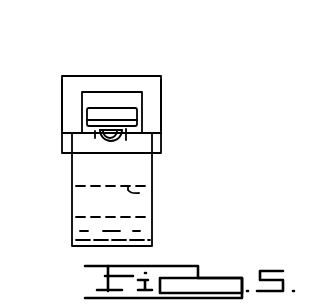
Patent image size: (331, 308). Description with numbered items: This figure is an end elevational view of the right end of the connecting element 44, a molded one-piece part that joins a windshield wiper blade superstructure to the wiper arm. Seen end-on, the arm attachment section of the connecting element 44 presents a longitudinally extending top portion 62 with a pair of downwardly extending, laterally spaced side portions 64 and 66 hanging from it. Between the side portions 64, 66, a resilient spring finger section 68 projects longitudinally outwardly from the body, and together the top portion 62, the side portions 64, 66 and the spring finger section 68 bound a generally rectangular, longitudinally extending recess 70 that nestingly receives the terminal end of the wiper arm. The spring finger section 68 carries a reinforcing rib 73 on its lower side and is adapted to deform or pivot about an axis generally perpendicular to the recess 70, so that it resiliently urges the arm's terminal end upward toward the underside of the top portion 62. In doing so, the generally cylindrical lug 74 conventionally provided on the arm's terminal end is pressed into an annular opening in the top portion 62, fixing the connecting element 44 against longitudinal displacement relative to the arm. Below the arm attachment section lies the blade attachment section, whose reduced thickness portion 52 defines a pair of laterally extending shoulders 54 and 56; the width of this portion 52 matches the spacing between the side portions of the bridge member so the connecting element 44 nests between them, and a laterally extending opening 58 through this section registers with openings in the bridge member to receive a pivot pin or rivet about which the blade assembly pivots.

The connecting element 44 is at (165, 128).
The reduced thickness portion 52 is at (135, 232).
The laterally extending shoulder 54 is at (72, 153).
The laterally extending shoulder 56 is at (161, 157).
The laterally extending opening 58 is at (160, 193).
The top portion 62 is at (115, 79).
The side portion 64 is at (163, 91).
The side portion 66 is at (74, 91).
The resilient spring finger section 68 is at (127, 141).
The longitudinally extending recess 70 is at (87, 94).
The reinforcing rib 73 is at (100, 143).
The cylindrically shaped lug 74 is at (112, 117).